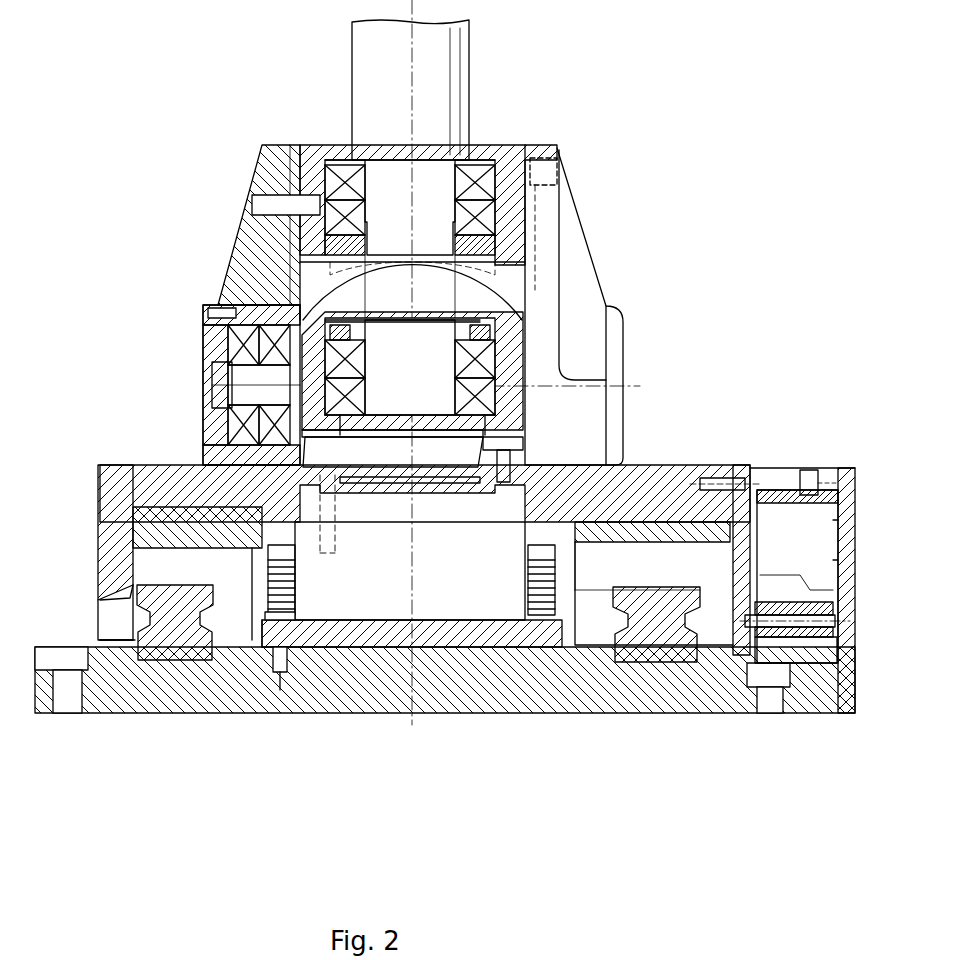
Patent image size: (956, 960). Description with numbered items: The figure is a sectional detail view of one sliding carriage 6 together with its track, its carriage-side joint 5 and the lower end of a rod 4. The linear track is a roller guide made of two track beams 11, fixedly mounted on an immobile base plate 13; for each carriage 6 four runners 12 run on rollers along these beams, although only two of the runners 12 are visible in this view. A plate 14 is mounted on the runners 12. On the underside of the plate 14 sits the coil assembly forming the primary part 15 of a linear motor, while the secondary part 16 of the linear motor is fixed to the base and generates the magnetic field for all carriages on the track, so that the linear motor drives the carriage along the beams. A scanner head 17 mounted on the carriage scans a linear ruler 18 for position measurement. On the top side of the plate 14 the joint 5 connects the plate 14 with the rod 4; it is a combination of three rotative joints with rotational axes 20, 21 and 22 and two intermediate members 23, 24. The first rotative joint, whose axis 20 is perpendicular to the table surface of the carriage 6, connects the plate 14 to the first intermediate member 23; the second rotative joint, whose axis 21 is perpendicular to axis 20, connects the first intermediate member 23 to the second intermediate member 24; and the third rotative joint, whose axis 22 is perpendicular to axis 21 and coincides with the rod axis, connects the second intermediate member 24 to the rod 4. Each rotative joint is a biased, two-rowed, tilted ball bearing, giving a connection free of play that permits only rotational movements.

The rod 4 is at (440, 84).
The carriage-side joint 5 is at (640, 185).
The sliding carriage 6 is at (732, 402).
The track beams 11 is at (640, 590).
The runners 12 is at (710, 620).
The base plate 13 is at (730, 700).
The plate 14 is at (677, 477).
The primary part of linear motor 15 is at (480, 600).
The secondary part of linear motor 16 is at (458, 640).
The scanner head 17 is at (812, 650).
The linear ruler 18 is at (825, 520).
The axis of rotation of first rotative joint 20 is at (413, 383).
The axis of rotation of second rotative joint 21 is at (575, 383).
The axis of rotation of third rotative joint 22 is at (480, 173).
The first intermediate member 23 is at (310, 402).
The second intermediate member 24 is at (257, 283).